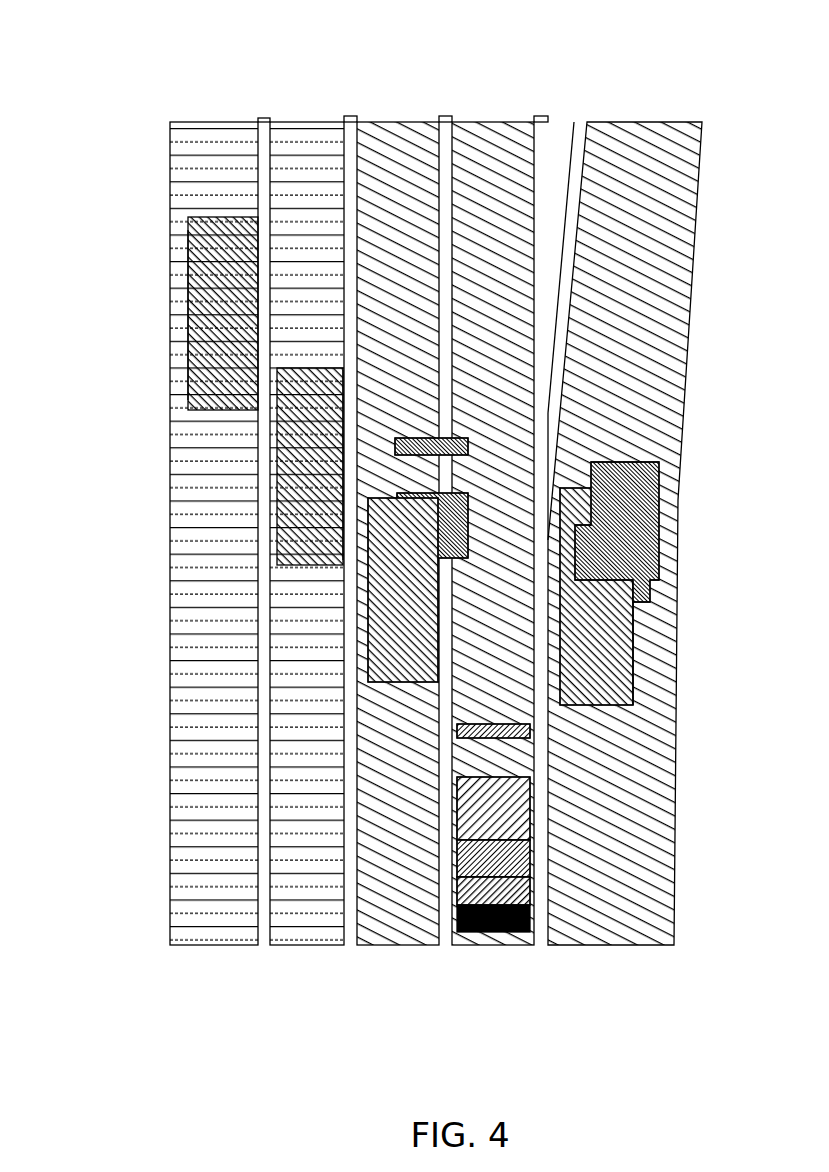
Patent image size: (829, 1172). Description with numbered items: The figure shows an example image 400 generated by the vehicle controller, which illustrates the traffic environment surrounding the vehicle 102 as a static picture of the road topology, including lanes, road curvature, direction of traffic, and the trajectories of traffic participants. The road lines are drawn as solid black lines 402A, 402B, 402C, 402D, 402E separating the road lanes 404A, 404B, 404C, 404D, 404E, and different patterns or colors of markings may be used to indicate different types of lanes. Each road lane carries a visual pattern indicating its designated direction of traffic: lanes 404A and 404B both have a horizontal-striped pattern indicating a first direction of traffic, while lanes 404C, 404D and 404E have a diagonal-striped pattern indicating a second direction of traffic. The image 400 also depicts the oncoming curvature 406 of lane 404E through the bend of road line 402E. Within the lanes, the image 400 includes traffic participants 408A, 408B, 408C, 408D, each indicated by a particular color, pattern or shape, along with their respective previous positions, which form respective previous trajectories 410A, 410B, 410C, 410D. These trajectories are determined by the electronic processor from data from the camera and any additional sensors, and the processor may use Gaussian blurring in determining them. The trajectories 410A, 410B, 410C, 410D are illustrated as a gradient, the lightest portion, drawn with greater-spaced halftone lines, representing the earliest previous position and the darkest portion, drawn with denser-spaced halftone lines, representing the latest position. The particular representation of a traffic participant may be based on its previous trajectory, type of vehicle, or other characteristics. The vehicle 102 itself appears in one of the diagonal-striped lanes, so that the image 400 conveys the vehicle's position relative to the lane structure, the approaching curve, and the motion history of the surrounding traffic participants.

The image 400 is at (150, 44).
The road line 402A is at (264, 118).
The road line 402B is at (350, 115).
The road line 402C is at (445, 115).
The road line 402D is at (541, 113).
The road line 402E is at (583, 123).
The road lane 404A is at (213, 948).
The road lane 404B is at (305, 948).
The road lane 404C is at (398, 948).
The road lane 404D is at (493, 948).
The road lane 404E is at (625, 560).
The oncoming curvature 406 is at (580, 293).
The traffic participant 408A is at (260, 368).
The traffic participant 408B is at (345, 543).
The traffic participant 408C is at (394, 488).
The traffic participant 408D is at (590, 520).
The previous trajectory 410A is at (188, 283).
The previous trajectory 410B is at (353, 390).
The previous trajectory 410C is at (368, 634).
The previous trajectory 410D is at (645, 632).
The vehicle 102 is at (518, 771).